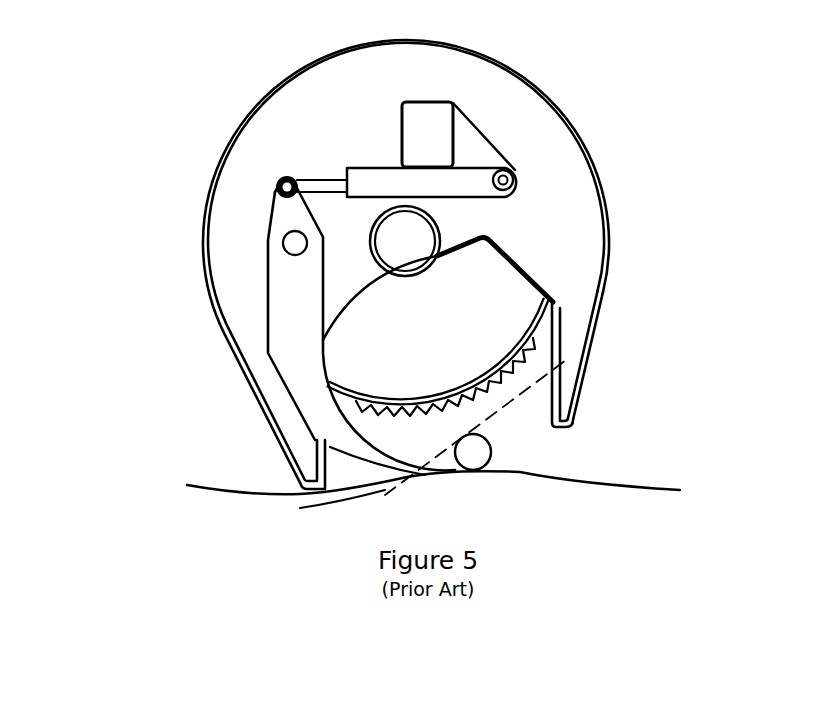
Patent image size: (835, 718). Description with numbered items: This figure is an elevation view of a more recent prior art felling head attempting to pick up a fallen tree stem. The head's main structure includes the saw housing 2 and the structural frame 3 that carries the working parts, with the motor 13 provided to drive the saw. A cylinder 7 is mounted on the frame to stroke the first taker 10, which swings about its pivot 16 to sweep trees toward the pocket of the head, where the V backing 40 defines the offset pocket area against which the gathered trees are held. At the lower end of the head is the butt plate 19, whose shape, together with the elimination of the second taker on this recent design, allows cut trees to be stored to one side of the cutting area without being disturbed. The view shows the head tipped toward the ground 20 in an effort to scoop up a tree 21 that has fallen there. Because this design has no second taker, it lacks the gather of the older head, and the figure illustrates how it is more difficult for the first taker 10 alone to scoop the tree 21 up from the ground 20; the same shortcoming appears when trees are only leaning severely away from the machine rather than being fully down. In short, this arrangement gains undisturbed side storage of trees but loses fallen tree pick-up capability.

The saw housing 2 is at (240, 130).
The structural frame 3 is at (427, 103).
The cylinder 7 is at (367, 167).
The first taker 10 is at (287, 393).
The motor 13 is at (440, 219).
The pivot hole 16 is at (297, 243).
The butt plate 19 is at (455, 332).
The ground 20 is at (590, 484).
The tree 21 is at (490, 447).
The V backing 40 is at (527, 264).